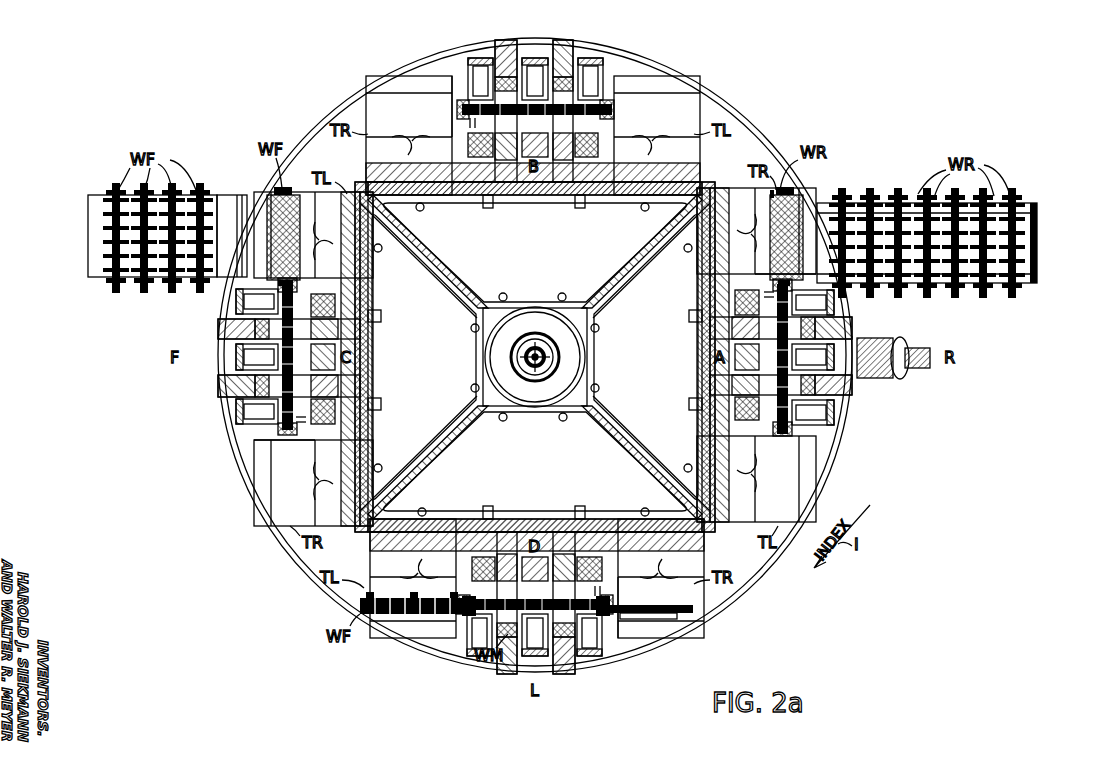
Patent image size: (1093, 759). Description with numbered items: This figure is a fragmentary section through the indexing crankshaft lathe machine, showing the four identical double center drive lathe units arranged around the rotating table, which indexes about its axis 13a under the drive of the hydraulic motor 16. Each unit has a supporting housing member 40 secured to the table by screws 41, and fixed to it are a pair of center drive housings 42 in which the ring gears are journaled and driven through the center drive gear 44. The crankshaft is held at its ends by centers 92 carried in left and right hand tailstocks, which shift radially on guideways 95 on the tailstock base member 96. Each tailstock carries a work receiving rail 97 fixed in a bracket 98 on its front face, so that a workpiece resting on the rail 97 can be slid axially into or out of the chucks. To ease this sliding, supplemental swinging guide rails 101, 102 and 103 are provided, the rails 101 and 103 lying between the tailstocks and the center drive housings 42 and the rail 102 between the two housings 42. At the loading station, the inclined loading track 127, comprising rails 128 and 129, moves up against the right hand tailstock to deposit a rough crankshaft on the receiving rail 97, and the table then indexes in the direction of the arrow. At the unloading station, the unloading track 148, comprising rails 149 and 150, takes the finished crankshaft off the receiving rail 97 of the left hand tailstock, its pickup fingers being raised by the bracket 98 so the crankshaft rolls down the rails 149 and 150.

The table axis 13a is at (522, 373).
The hydraulic motor 16 is at (904, 346).
The supporting housing member 40 is at (466, 194).
The screws 41 is at (560, 293).
The center drive housings 42 is at (566, 40).
The center drive gear 44 is at (556, 195).
The centers 92 is at (456, 132).
The guideways 95 is at (535, 357).
The tailstock base member 96 is at (368, 171).
The work receiving rail 97 is at (460, 624).
The bracket 98 is at (390, 624).
The supplemental swinging guide rail 101 is at (592, 58).
The supplemental swinging guide rail 102 is at (535, 58).
The supplemental swinging guide rail 103 is at (472, 58).
The loading track 127 is at (950, 238).
The rail 128 is at (1002, 286).
The rail 129 is at (1036, 200).
The unloading track 148 is at (128, 246).
The rail 149 is at (150, 280).
The rail 150 is at (232, 192).